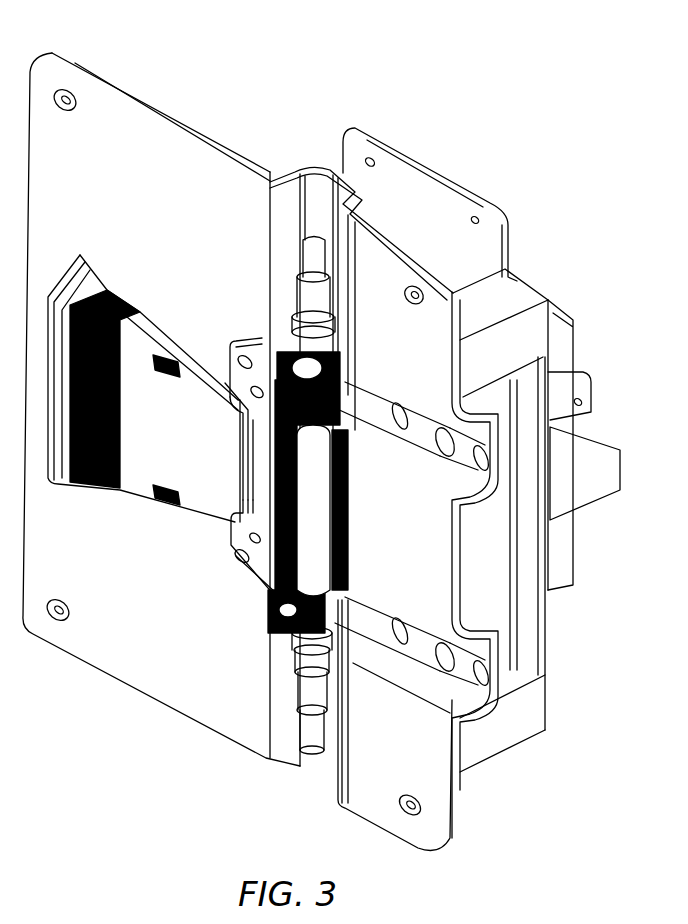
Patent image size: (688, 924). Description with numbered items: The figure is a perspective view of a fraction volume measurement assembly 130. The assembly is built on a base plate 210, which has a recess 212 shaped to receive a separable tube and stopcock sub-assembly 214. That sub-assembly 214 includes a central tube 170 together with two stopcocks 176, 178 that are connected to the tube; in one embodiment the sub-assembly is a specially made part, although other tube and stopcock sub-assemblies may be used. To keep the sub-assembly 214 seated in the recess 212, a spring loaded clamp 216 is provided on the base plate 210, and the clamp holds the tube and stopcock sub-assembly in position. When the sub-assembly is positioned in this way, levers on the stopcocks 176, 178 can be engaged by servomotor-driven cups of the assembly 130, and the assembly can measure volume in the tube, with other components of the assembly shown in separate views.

The fraction volume measurement assembly 130 is at (479, 103).
The central tube 170 is at (355, 513).
The stopcock 176 is at (252, 646).
The stopcock 178 is at (268, 335).
The base plate 210 is at (140, 698).
The recess 212 is at (335, 790).
The tube and stopcock sub-assembly 214 is at (268, 552).
The spring loaded clamp 216 is at (125, 490).